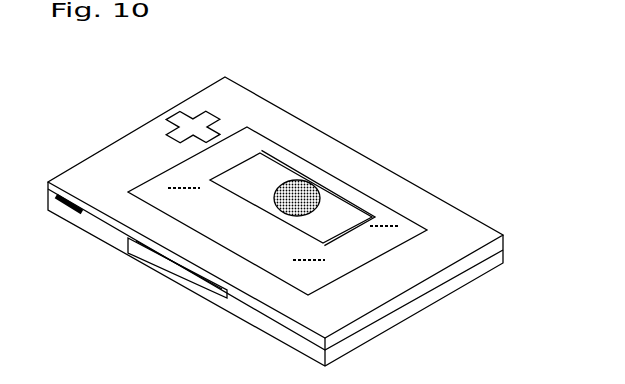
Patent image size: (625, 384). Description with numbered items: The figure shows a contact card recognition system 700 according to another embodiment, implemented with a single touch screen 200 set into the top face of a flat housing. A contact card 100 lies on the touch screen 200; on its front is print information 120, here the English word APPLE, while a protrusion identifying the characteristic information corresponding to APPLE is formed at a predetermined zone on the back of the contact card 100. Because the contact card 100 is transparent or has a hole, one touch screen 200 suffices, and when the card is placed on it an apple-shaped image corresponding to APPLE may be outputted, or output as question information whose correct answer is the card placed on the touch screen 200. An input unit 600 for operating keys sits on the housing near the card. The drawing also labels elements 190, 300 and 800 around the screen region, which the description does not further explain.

The contact card recognition system 700 is at (463, 212).
The print information 120 is at (172, 216).
The contact card 100 is at (398, 213).
The touch screen 200 is at (291, 167).
The bezel frame 190 is at (342, 194).
The label region 300 is at (271, 172).
The sensor button 800 is at (302, 181).
The input unit 600 is at (178, 117).